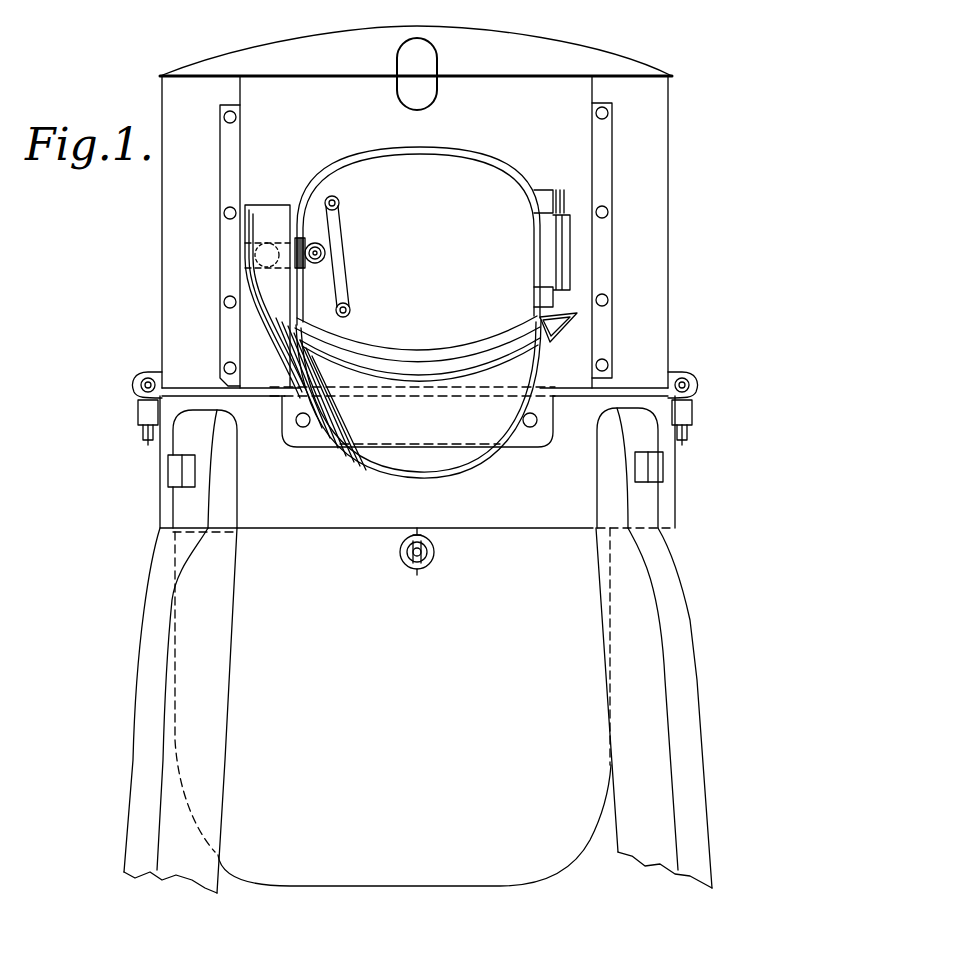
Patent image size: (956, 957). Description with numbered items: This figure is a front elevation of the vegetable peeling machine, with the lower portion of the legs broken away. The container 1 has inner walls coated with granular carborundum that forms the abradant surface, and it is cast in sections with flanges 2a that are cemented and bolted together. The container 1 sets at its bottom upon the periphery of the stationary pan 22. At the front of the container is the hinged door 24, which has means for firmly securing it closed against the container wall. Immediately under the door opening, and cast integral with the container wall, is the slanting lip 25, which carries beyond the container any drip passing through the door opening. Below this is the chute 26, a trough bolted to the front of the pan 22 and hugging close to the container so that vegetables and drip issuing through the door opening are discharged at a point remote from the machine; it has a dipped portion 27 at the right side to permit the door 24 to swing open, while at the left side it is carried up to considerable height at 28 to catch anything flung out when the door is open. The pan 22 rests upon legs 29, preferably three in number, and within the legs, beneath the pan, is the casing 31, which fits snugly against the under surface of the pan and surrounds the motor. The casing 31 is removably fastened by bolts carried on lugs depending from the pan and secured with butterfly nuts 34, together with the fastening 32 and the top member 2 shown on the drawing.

The container 1 is at (668, 258).
The cover 2 is at (632, 67).
The flanges 2a is at (224, 235).
The stationary pan 22 is at (417, 462).
The hinged door 24 is at (432, 254).
The slanting lip 25 is at (494, 352).
The chute 26 is at (360, 460).
The dipped portion 27 is at (557, 325).
The raised portion of chute 28 is at (268, 218).
The legs 29 is at (218, 725).
The casing 31 is at (339, 878).
The bolt 32 is at (437, 548).
The butterfly nuts 34 is at (404, 552).